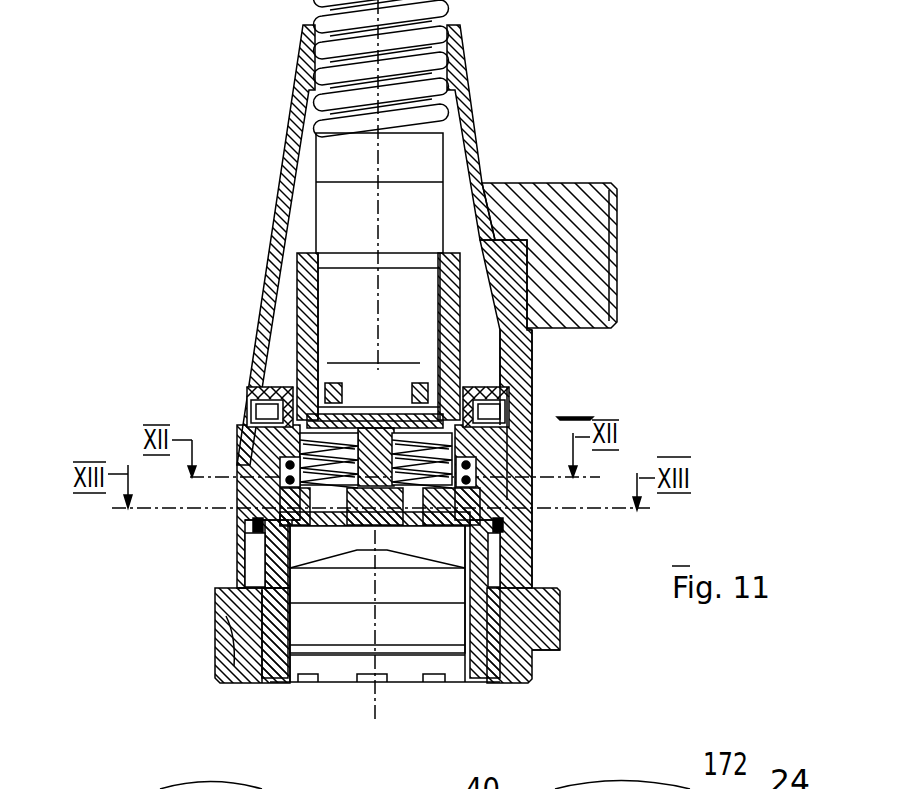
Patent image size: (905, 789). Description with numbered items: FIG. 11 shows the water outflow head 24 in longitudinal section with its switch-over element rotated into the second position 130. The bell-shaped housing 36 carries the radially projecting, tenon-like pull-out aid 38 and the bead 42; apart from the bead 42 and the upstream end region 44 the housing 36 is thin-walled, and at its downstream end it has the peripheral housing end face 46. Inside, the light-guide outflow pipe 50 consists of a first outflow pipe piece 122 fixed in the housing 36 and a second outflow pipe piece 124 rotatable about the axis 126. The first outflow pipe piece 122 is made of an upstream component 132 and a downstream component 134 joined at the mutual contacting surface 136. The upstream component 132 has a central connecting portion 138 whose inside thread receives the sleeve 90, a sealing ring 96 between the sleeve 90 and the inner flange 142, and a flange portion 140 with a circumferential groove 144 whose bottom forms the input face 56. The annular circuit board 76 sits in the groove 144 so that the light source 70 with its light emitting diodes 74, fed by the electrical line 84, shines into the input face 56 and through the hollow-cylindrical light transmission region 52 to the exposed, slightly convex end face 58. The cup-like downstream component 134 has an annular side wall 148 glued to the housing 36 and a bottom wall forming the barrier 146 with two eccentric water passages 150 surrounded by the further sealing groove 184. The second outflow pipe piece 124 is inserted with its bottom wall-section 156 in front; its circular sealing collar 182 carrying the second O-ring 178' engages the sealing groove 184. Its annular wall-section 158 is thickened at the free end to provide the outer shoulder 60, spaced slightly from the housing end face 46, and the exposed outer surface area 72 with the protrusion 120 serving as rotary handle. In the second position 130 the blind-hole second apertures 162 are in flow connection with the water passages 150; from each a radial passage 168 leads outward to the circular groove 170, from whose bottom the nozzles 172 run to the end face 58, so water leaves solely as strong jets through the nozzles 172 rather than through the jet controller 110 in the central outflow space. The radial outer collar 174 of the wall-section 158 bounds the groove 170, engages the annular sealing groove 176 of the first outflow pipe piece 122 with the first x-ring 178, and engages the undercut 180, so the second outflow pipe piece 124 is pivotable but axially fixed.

The water outflow head 24 is at (198, 88).
The end region 44 is at (307, 62).
The housing 36 is at (292, 126).
The pull-out aid 38 is at (585, 190).
The further sealing groove 184 is at (347, 433).
The water passages 150 is at (300, 276).
The upstream component 132 is at (305, 312).
The sleeve 90 is at (445, 287).
The connecting portion 138 is at (470, 300).
The electrical line 84 is at (463, 305).
The circumferential groove 144 is at (233, 413).
The light emitting diodes 74 is at (247, 453).
The light source 70 is at (452, 394).
The sealing ring 96 is at (333, 375).
The annular circuit board 76 is at (267, 390).
The input face 56 is at (240, 420).
The light transmission region 52 is at (240, 460).
The downstream component 134 is at (240, 453).
The barrier 146 is at (475, 385).
The inner flange 142 is at (530, 380).
The flange portion 140 is at (530, 393).
The first outflow pipe piece 122 is at (530, 410).
The outflow pipe 50 is at (530, 440).
The mutual contacting surface 136 is at (530, 433).
The bead 42 is at (520, 353).
The sealing collar 182 is at (293, 460).
The radial passage 168 is at (300, 513).
The annular side wall 148 is at (267, 555).
The circular groove 170 is at (230, 558).
The housing end face 46 is at (233, 580).
The outer shoulder 60 is at (213, 608).
The exposed outer surface area 72 is at (217, 642).
The undercut 180 is at (213, 650).
The end face 58 is at (253, 680).
The annular sealing groove 176 is at (497, 525).
The first x-ring 178 is at (632, 537).
The second outflow pipe piece 124 is at (497, 550).
The protrusion 120 is at (550, 618).
The jet controller 110 is at (447, 628).
The second position 130 is at (537, 664).
The nozzles 172 is at (478, 672).
The annular wall-section 158 is at (300, 575).
The radial outer collar 174 is at (345, 528).
The axis 126 is at (372, 716).
The bottom wall-section 156 is at (413, 505).
The second O-ring 178' is at (372, 754).
The second apertures 162 is at (430, 500).